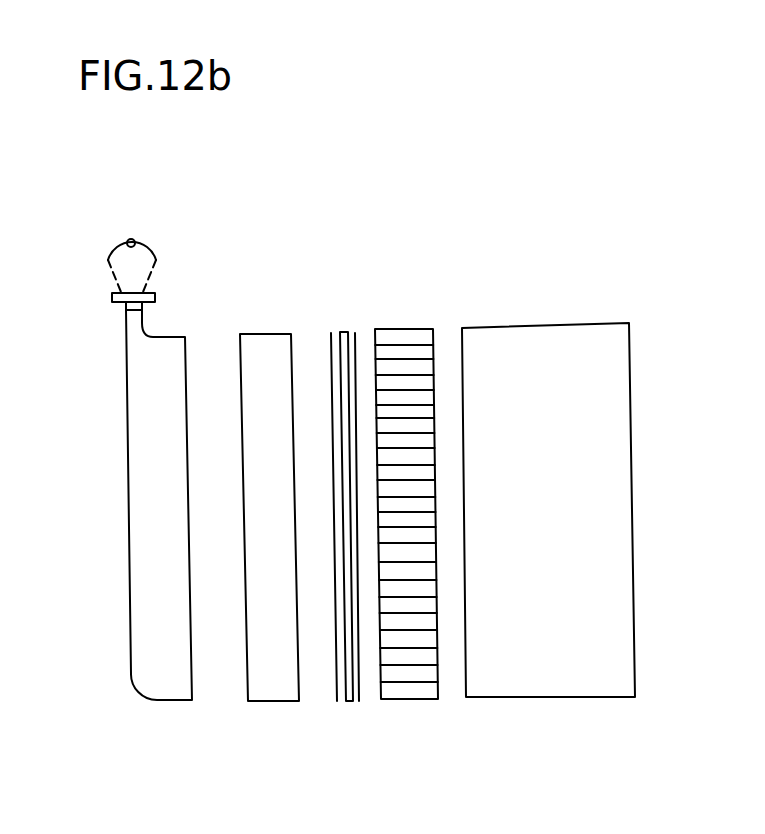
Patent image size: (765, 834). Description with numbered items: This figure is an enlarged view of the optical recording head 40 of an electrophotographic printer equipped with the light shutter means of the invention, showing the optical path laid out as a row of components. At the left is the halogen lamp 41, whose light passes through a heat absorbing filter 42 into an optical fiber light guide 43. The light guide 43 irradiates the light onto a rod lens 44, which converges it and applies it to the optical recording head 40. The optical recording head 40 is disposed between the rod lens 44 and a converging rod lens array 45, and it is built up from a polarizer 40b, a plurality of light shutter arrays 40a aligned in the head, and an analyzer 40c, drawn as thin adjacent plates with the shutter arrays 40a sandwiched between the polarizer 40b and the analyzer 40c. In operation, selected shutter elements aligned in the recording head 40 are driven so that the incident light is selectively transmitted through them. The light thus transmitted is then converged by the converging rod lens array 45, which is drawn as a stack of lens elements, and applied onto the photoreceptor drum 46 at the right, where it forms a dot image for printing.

The optical recording head 40 is at (364, 506).
The light shutter arrays 40a is at (352, 702).
The polarizer 40b is at (337, 701).
The analyzer 40c is at (360, 701).
The halogen lamp 41 is at (131, 228).
The heat absorbing filter 42 is at (155, 297).
The optical fiber light guide 43 is at (150, 522).
The rod lens 44 is at (276, 334).
The converging rod lens array 45 is at (422, 329).
The photoreceptor drum 46 is at (550, 323).